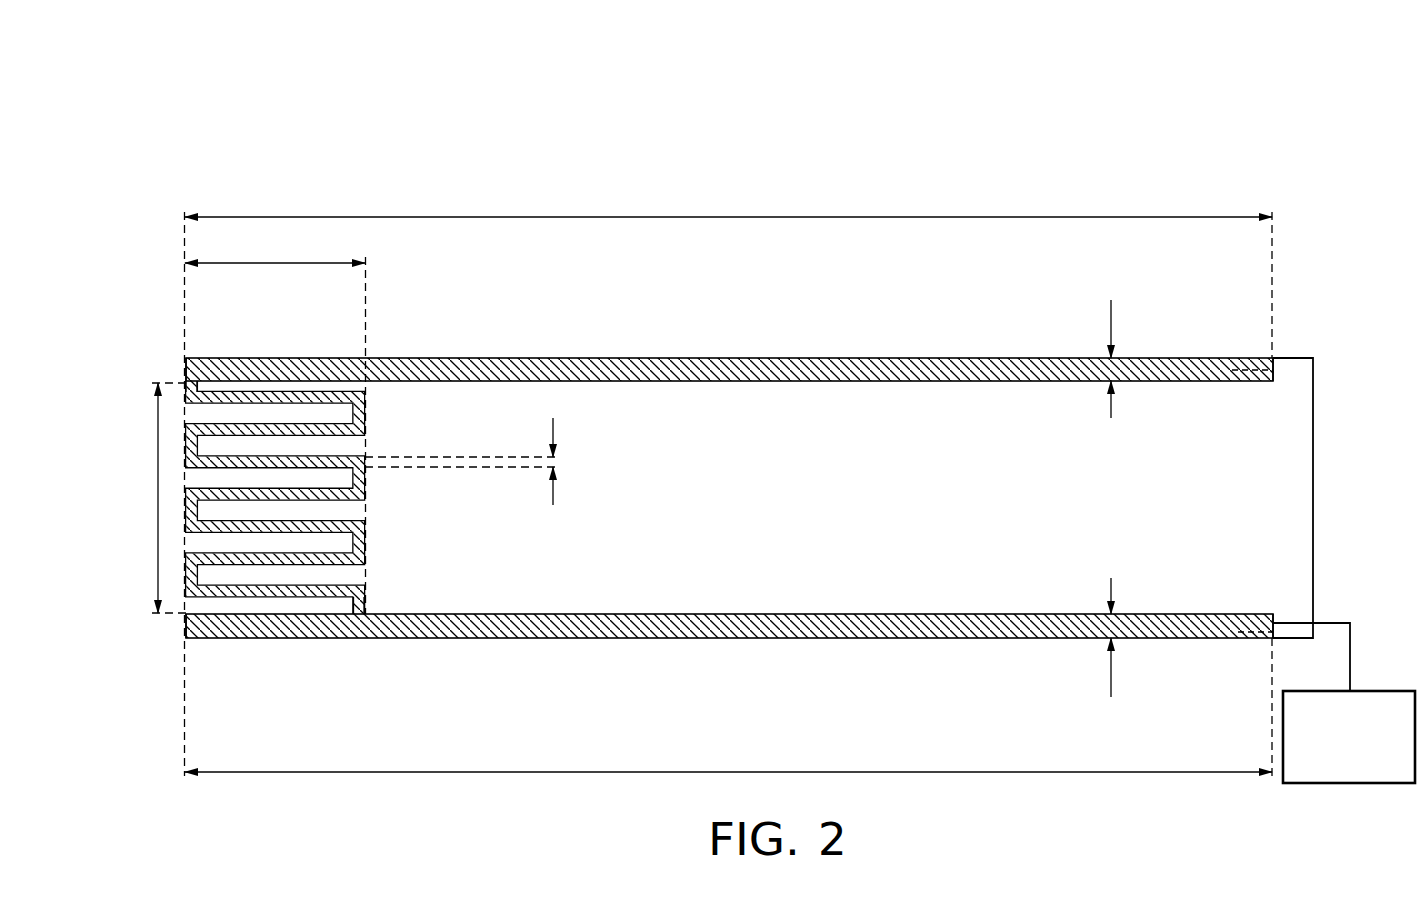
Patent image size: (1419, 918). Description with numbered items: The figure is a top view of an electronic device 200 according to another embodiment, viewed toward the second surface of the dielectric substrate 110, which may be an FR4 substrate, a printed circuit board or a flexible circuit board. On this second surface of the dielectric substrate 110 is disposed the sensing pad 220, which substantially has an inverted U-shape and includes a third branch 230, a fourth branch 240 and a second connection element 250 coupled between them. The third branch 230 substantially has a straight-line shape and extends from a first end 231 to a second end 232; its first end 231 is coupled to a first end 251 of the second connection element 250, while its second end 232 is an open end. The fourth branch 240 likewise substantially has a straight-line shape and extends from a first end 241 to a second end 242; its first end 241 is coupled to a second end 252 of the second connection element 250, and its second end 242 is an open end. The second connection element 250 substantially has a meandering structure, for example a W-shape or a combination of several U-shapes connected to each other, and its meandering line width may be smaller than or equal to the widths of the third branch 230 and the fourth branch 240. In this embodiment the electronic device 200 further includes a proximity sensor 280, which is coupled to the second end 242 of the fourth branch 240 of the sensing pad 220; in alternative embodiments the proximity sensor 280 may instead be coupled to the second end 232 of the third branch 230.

The electronic device 200 is at (188, 137).
The sensing pad 220 is at (1071, 80).
The third branch 230 is at (787, 360).
The first end of the third branch 231 is at (185, 372).
The second end of the third branch 232 is at (1225, 369).
The fourth branch 240 is at (750, 630).
The first end of the fourth branch 241 is at (185, 627).
The second end of the fourth branch 242 is at (1230, 635).
The second connection element 250 is at (368, 507).
The first end of the second connection element 251 is at (191, 376).
The second end of the second connection element 252 is at (360, 588).
The dielectric substrate 110 is at (1293, 501).
The proximity sensor 280 is at (1350, 785).